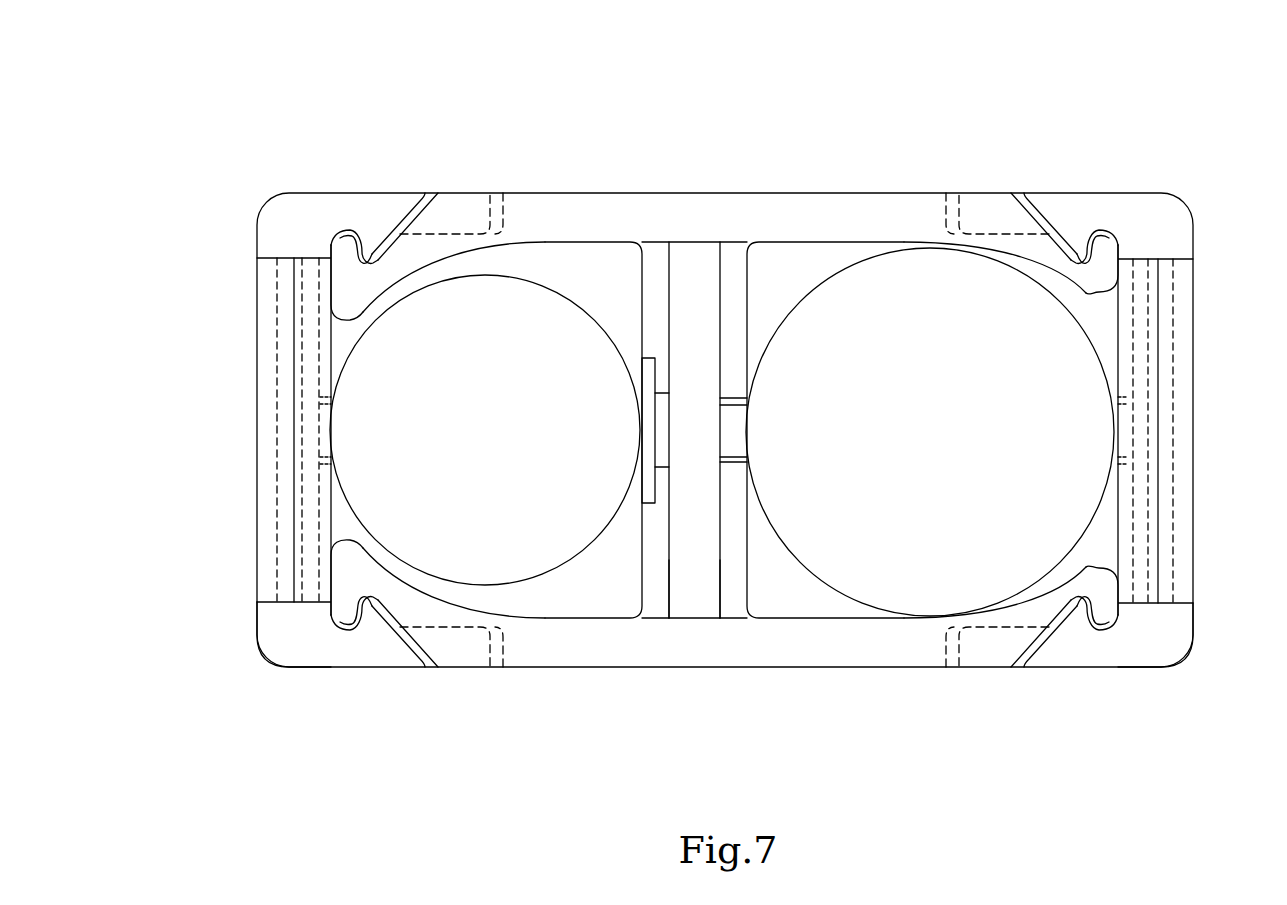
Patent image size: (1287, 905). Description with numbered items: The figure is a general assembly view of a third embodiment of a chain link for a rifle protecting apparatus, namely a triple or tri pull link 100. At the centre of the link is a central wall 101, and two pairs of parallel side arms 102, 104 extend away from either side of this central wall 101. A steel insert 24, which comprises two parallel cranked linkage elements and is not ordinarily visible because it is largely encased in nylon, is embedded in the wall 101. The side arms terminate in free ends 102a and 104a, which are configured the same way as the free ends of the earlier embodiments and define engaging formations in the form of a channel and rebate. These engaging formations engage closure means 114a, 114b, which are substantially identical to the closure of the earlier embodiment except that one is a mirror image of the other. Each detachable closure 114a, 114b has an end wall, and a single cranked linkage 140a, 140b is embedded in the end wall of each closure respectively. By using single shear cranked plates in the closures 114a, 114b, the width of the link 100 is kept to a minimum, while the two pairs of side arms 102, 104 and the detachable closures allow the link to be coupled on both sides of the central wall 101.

The tri pull link 100 is at (797, 160).
The central wall 101 is at (703, 267).
The steel insert 24 is at (690, 600).
The side arms 102 is at (527, 210).
The free ends of side arms 102a is at (348, 255).
The side arms 104 is at (903, 207).
The free ends of side arms 104a is at (1107, 245).
The single cranked linkage 140a is at (287, 350).
The single cranked linkage 140b is at (1165, 352).
The closure means 114a is at (287, 643).
The closure means 114b is at (1163, 645).